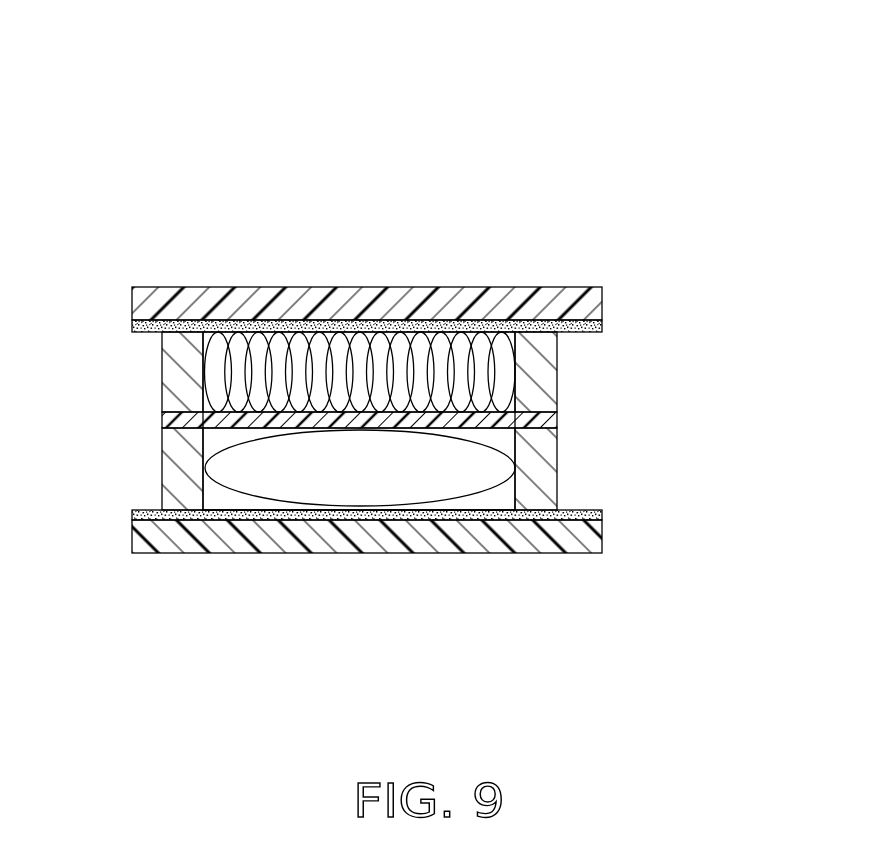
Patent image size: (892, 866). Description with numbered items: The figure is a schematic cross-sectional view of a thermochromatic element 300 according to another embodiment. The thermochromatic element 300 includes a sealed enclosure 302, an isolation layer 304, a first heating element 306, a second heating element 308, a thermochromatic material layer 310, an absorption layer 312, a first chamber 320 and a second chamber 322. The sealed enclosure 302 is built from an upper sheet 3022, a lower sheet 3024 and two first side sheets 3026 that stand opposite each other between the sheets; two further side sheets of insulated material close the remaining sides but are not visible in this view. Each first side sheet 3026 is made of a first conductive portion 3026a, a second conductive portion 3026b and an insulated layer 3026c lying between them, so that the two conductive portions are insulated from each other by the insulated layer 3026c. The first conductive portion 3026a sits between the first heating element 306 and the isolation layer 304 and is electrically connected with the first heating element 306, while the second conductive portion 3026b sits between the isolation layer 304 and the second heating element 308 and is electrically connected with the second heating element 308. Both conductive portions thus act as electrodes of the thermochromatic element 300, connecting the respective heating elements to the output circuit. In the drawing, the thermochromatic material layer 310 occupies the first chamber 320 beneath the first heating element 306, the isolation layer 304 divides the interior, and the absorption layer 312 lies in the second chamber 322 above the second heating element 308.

The thermochromatic element 300 is at (442, 324).
The sealed enclosure 302 is at (442, 418).
The upper sheet 3022 is at (603, 297).
The lower sheet 3024 is at (438, 536).
The first side sheet 3026 is at (459, 421).
The first conductive portion 3026a is at (533, 375).
The second conductive portion 3026b is at (540, 477).
The insulated layer 3026c is at (557, 417).
The first heating element 306 is at (132, 326).
The second heating element 308 is at (132, 515).
The thermochromatic material layer 310 is at (277, 343).
The first chamber 320 is at (225, 340).
The isolation layer 304 is at (210, 435).
The absorption layer 312 is at (420, 492).
The second chamber 322 is at (228, 502).